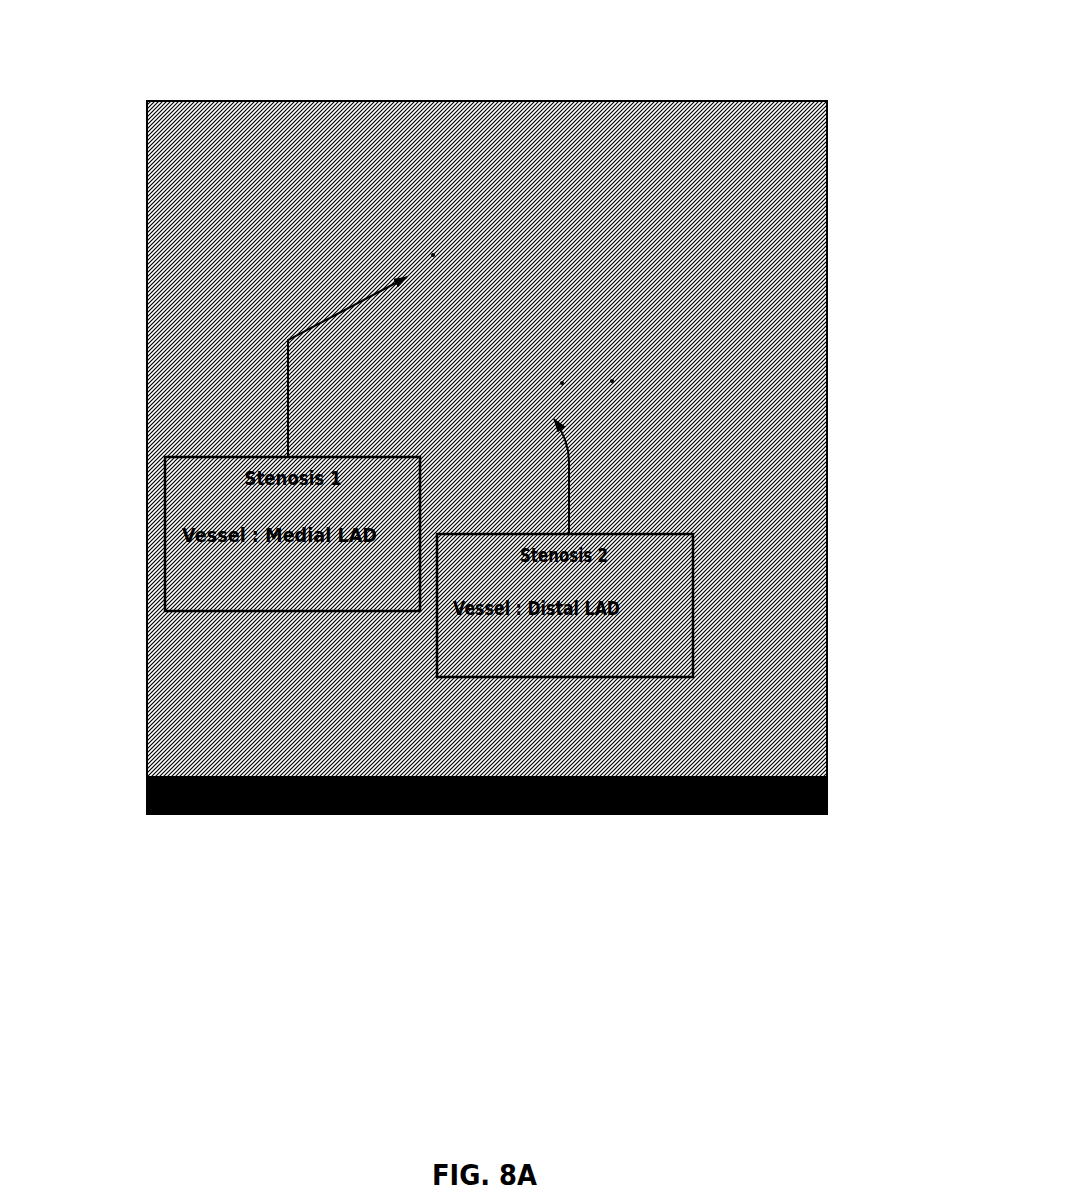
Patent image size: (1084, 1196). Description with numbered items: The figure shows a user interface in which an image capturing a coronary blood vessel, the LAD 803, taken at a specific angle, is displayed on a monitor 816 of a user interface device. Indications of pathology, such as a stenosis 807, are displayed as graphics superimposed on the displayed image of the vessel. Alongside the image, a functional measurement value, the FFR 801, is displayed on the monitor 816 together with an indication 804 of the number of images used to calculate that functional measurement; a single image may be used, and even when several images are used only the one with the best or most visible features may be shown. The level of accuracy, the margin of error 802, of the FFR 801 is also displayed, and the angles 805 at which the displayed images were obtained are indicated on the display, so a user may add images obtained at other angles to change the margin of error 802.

The FFR 801 is at (447, 630).
The margin of error 802 is at (287, 609).
The LAD 803 is at (615, 383).
The indication of the number of images 804 is at (437, 587).
The angle 805 is at (233, 817).
The stenosis 807 is at (562, 383).
The monitor 816 is at (848, 230).